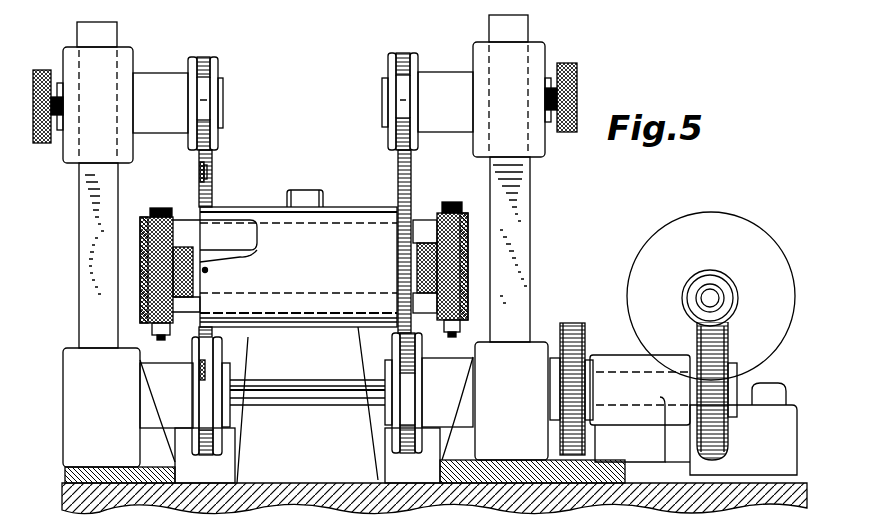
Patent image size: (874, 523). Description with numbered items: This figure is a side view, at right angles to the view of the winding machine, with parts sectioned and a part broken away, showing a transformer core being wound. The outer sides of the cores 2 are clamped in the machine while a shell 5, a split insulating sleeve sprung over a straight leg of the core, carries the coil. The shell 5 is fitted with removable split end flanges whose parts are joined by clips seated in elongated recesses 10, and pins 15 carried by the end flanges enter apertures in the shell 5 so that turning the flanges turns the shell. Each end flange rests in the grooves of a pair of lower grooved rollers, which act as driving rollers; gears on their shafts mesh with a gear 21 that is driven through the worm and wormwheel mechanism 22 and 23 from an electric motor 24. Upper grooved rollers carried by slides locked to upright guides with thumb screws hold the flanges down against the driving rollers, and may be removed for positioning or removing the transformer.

The core 2 is at (421, 215).
The shell 5 is at (294, 305).
The elongated recess 10 is at (200, 177).
The pin 15 is at (207, 270).
The gear 21 is at (572, 322).
The worm 22 is at (728, 277).
The wormwheel 23 is at (735, 445).
The electric motor 24 is at (683, 205).